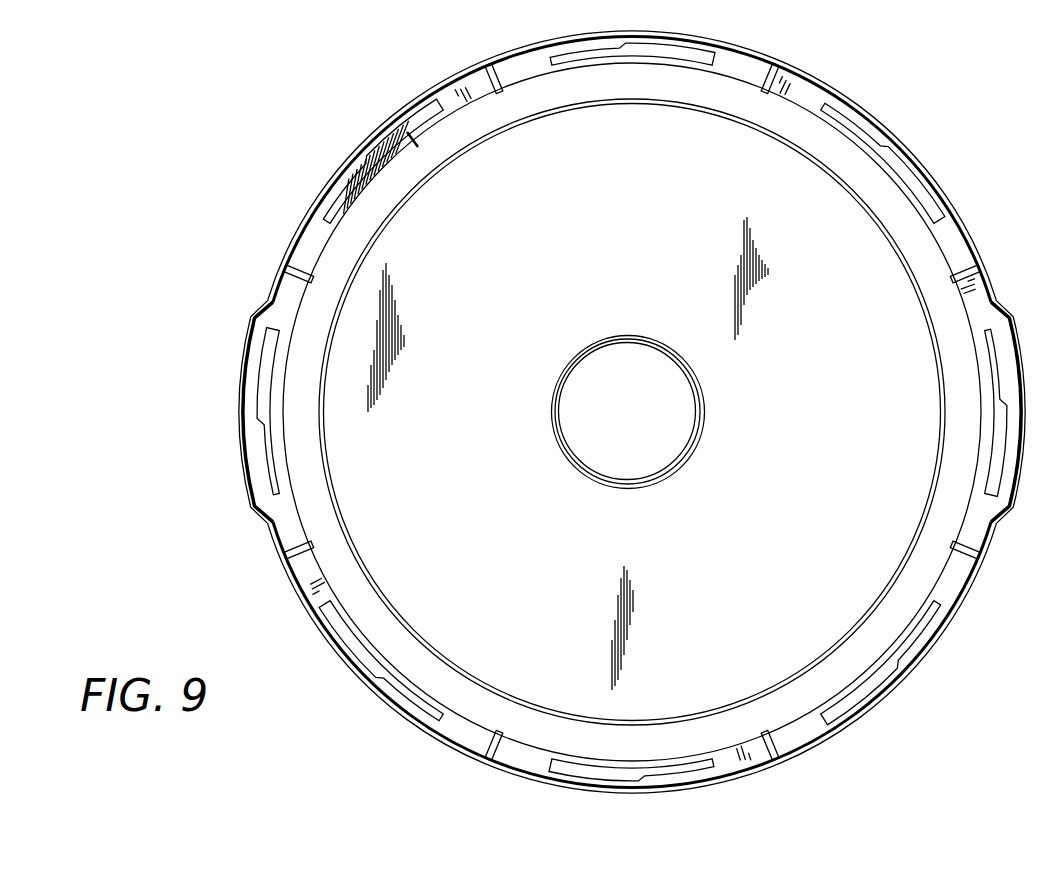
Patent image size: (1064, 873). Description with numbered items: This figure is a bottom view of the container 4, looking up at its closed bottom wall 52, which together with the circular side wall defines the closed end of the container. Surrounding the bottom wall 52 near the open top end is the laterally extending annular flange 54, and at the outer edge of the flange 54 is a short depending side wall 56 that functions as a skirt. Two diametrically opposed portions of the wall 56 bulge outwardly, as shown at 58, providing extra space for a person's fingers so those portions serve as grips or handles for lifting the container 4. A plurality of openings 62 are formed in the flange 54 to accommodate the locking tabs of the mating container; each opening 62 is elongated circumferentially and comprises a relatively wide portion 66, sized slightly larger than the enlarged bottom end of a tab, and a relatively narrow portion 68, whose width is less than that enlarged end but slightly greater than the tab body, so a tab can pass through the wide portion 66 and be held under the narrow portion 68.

The container 4 is at (822, 68).
The bottom wall 52 is at (745, 516).
The annular flange 54 is at (953, 232).
The depending side wall 56 is at (968, 278).
The bulging portions 58 is at (240, 380).
The openings 62 is at (446, 107).
The wide portion 66 is at (427, 127).
The narrow portion 68 is at (347, 190).